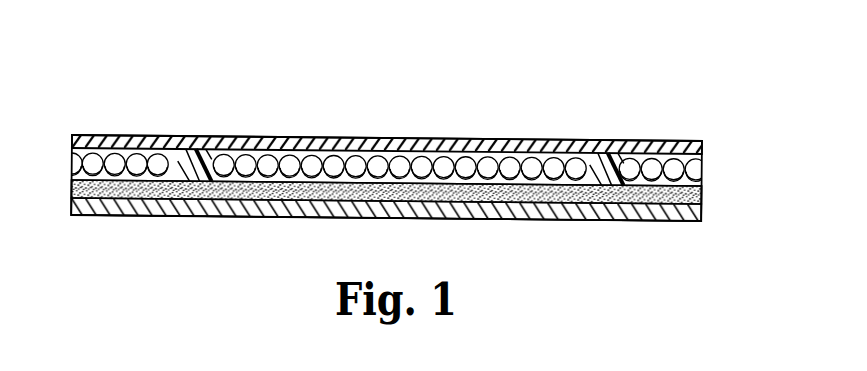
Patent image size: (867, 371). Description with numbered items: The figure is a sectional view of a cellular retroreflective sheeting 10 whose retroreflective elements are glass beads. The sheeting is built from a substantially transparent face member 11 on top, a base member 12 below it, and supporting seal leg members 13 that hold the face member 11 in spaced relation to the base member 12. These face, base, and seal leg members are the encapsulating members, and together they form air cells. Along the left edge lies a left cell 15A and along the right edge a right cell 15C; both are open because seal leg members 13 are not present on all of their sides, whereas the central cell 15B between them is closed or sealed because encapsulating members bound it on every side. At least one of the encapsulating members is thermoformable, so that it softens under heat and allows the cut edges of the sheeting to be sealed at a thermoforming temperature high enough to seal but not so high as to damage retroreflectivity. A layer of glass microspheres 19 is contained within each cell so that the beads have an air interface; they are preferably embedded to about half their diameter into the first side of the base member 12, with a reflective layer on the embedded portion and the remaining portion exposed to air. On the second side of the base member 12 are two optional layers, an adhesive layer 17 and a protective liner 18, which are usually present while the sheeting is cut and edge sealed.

The cellular retroreflective sheeting 10 is at (568, 90).
The face member 11 is at (226, 143).
The base member 12 is at (72, 191).
The seal leg members 13 is at (191, 152).
The left cell 15A is at (122, 147).
The central cell 15B is at (390, 158).
The right cell 15C is at (684, 146).
The adhesive layer 17 is at (246, 193).
The protective liner 18 is at (405, 208).
The glass microspheres 19 is at (445, 160).